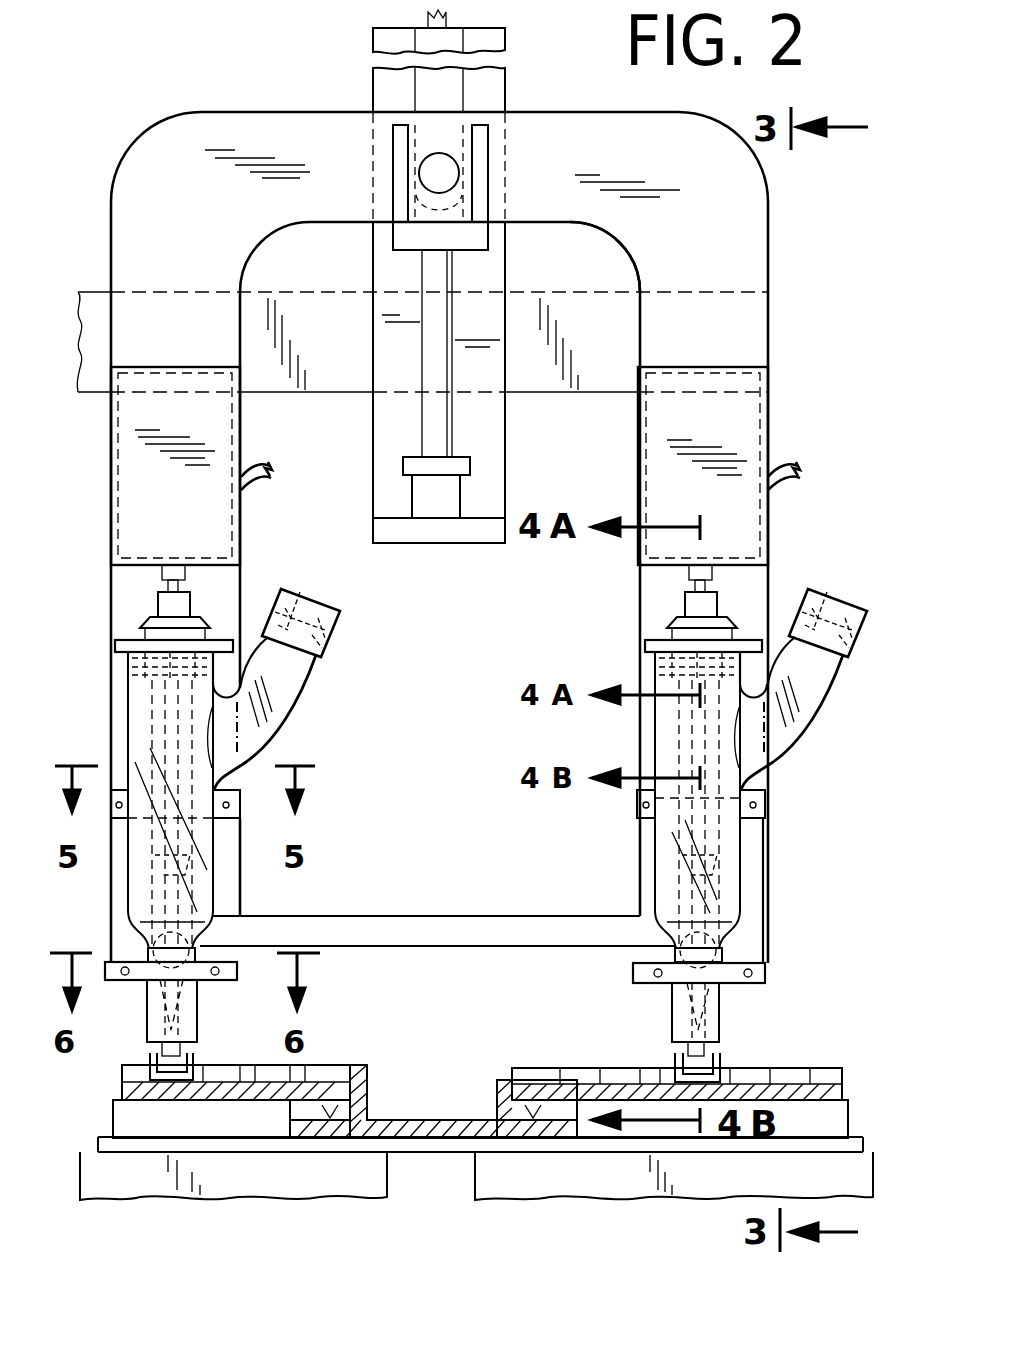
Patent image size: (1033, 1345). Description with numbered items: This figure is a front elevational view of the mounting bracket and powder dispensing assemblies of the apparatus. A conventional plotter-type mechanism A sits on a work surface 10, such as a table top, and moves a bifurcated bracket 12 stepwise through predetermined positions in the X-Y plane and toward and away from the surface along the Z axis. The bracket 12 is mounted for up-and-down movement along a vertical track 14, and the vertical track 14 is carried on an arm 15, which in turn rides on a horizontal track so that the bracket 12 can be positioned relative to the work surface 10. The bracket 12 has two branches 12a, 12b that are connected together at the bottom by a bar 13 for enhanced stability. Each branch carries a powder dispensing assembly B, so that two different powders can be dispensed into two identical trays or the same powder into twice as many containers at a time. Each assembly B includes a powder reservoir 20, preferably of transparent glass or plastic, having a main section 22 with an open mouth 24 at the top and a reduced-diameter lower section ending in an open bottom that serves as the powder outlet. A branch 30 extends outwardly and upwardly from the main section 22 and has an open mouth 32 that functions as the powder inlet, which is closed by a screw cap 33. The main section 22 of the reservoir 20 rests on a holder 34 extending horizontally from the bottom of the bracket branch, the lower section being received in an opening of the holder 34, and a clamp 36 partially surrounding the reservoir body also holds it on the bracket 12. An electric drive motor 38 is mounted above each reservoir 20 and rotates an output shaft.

The work surface 10 is at (437, 1145).
The bifurcated bracket 12 is at (237, 114).
The branch 12a is at (160, 232).
The branch 12b is at (720, 333).
The bar 13 is at (452, 937).
The vertical track 14 is at (400, 437).
The arm 15 is at (610, 298).
The powder reservoir 20 is at (217, 884).
The main section 22 is at (140, 738).
The open mouth 24 is at (125, 655).
The branch 30 is at (292, 705).
The open mouth 32 is at (303, 592).
The screw cap 33 is at (342, 628).
The holder 34 is at (135, 975).
The clamp 36 is at (237, 800).
The electric drive motor 38 is at (170, 415).
The plotter-type mechanism A is at (373, 67).
The powder dispensing assembly B is at (110, 530).